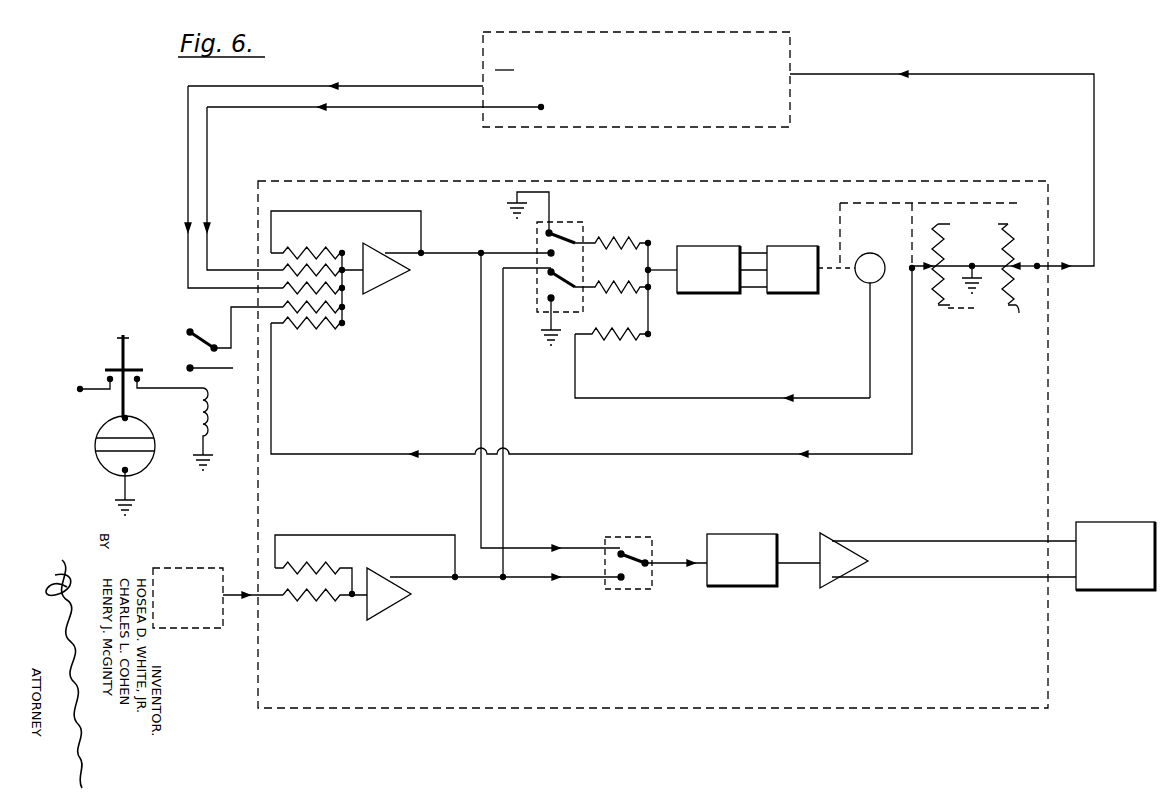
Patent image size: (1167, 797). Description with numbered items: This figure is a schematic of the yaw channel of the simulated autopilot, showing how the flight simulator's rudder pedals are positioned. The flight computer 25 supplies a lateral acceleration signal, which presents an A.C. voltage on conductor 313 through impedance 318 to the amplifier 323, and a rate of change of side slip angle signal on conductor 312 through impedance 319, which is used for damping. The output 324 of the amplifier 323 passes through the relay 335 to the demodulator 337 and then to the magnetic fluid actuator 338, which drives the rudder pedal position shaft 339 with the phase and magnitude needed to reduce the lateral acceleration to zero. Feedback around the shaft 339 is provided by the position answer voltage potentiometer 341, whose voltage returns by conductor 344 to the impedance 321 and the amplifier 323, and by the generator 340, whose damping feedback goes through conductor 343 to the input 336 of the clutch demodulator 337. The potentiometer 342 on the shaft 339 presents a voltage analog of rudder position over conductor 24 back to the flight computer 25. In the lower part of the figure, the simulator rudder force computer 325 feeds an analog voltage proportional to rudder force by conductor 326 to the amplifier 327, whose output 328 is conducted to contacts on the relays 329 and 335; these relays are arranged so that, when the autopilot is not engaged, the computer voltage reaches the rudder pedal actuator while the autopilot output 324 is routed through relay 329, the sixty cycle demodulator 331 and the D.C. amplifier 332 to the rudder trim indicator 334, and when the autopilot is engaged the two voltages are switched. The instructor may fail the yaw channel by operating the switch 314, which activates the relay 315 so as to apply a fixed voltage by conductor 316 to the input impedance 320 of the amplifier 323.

The conductor 24 is at (1094, 142).
The flight computer 25 is at (790, 122).
The conductor 312 is at (185, 204).
The conductor 313 is at (347, 108).
The switch 314 is at (123, 334).
The relay 315 is at (200, 421).
The conductor 316 is at (229, 318).
The impedance 318 is at (315, 252).
The impedance 319 is at (345, 290).
The input impedance 320 is at (345, 308).
The impedance 321 is at (327, 330).
The amplifier 323 is at (400, 275).
The output 324 is at (421, 252).
The simulator rudder force computer 325 is at (210, 568).
The conductor 326 is at (277, 597).
The amplifier 327 is at (393, 606).
The output 328 is at (457, 580).
The relay 329 is at (640, 537).
The 60 cycle demodulator 331 is at (740, 534).
The D.C. amplifier 332 is at (830, 540).
The rudder trim indicator 334 is at (1092, 522).
The relay 335 is at (583, 224).
The input 336 is at (650, 268).
The demodulator 337 is at (722, 246).
The magnetic fluid actuator 338 is at (787, 246).
The rudder pedal position shaft 339 is at (1022, 203).
The generator 340 is at (862, 281).
The position answer voltage potentiometer 341 is at (945, 305).
The potentiometer 342 is at (1019, 313).
The conductor 343 is at (723, 398).
The conductor 344 is at (738, 454).